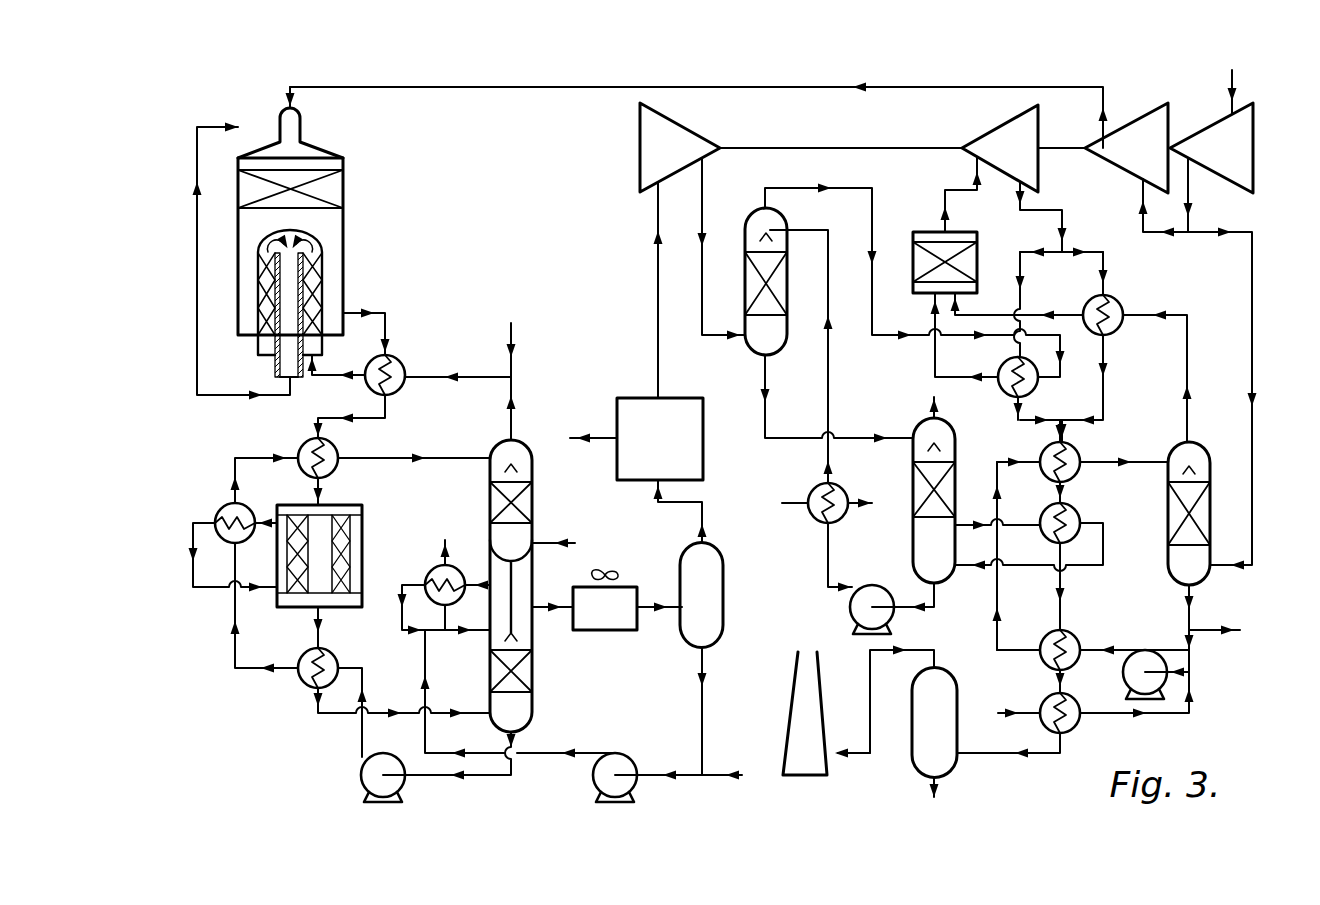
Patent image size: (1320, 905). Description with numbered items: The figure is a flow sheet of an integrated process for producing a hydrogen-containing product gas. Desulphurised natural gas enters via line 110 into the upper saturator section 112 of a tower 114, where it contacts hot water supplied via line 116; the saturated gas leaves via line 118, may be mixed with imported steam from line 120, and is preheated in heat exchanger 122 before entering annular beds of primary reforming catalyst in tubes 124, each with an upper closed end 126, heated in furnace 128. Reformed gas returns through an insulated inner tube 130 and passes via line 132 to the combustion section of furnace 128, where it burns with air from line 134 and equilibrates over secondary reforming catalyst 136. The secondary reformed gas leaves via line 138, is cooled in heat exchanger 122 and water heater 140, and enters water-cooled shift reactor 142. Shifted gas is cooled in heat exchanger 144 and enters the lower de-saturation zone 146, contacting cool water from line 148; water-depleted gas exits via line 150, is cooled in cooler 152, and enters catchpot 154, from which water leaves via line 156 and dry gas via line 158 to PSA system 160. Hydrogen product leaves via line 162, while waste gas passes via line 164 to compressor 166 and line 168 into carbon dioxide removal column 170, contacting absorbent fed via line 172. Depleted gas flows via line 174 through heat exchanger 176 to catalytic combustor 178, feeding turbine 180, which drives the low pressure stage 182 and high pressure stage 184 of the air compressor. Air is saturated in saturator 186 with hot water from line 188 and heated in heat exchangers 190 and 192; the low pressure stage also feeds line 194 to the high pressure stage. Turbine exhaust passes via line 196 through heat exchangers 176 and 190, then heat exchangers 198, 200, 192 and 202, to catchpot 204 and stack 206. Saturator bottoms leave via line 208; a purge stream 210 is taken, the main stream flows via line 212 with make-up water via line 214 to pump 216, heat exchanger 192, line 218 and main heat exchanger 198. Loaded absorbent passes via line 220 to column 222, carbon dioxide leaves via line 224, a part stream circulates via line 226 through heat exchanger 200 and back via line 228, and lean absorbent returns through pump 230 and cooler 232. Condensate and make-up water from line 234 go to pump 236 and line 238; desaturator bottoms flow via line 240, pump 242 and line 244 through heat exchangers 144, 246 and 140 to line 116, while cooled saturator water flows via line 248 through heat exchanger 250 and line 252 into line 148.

The line 110 is at (575, 543).
The upper (saturator) section 112 is at (534, 500).
The tower 114 is at (534, 570).
The line 116 is at (446, 457).
The line 118 is at (515, 415).
The line 120 is at (518, 336).
The heat exchanger 122 is at (400, 360).
The tubes 124 is at (322, 295).
The upper closed end 126 is at (298, 232).
The furnace 128 is at (346, 240).
The inner tube 130 is at (272, 372).
The line 132 is at (200, 270).
The line 134 is at (386, 90).
The secondary reforming catalyst 136 is at (335, 190).
The line 138 is at (387, 320).
The water heater 140 is at (338, 448).
The water-cooled shift reactor 142 is at (362, 528).
The heat exchanger 144 is at (338, 660).
The lower packed de-saturation zone 146 is at (534, 676).
The line 148 is at (470, 630).
The line 150 is at (540, 610).
The cooler 152 is at (600, 632).
The catchpot 154 is at (724, 585).
The line 156 is at (705, 652).
The line 158 is at (705, 512).
The PSA system 160 is at (705, 462).
The line 162 is at (600, 439).
The line 164 is at (657, 249).
The compressor 166 is at (705, 123).
The line 168 is at (700, 214).
The carbon dioxide removal column 170 is at (745, 275).
The line 172 is at (800, 230).
The line 174 is at (845, 181).
The heat exchanger 176 is at (1033, 390).
The catalytic combustor 178 is at (932, 231).
The turbine 180 is at (1000, 124).
The low pressure stage 182 is at (1203, 128).
The high pressure stage 184 is at (1138, 125).
The saturator 186 is at (1205, 441).
The line 188 is at (1148, 440).
The heat exchanger 190 is at (1120, 300).
The heat exchanger 192 is at (1078, 639).
The line 194 is at (1150, 236).
The line 196 is at (1067, 213).
The main heat exchanger 198 is at (1075, 449).
The heat exchanger 200 is at (1078, 505).
The heat exchanger 202 is at (1080, 727).
The catchpot 204 is at (958, 693).
The stack 206 is at (795, 675).
The line 208 is at (1185, 598).
The purge stream 210 is at (1200, 628).
The line 212 is at (1187, 645).
The line 214 is at (1162, 717).
The pump 216 is at (1122, 672).
The line 218 is at (999, 600).
The line 220 is at (770, 398).
The column 222 is at (912, 477).
The line 224 is at (928, 403).
The line 226 is at (1018, 516).
The line 228 is at (1044, 563).
The pump 230 is at (897, 590).
The cooler 232 is at (841, 521).
The line 234 is at (722, 771).
The pump 236 is at (630, 756).
The line 238 is at (428, 690).
The line 240 is at (497, 782).
The pump 242 is at (390, 753).
The line 244 is at (365, 683).
The heat exchanger 246 is at (222, 509).
The line 248 is at (477, 581).
The heat exchanger 250 is at (432, 570).
The line 252 is at (402, 630).